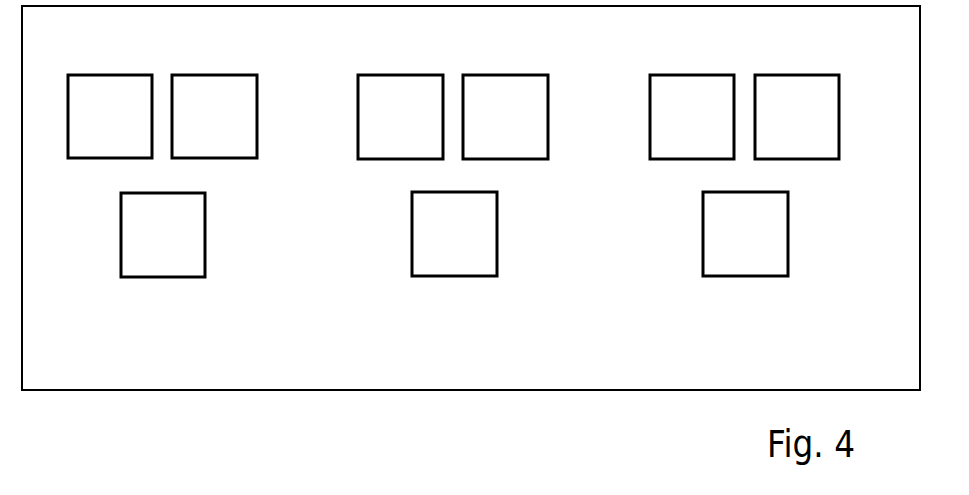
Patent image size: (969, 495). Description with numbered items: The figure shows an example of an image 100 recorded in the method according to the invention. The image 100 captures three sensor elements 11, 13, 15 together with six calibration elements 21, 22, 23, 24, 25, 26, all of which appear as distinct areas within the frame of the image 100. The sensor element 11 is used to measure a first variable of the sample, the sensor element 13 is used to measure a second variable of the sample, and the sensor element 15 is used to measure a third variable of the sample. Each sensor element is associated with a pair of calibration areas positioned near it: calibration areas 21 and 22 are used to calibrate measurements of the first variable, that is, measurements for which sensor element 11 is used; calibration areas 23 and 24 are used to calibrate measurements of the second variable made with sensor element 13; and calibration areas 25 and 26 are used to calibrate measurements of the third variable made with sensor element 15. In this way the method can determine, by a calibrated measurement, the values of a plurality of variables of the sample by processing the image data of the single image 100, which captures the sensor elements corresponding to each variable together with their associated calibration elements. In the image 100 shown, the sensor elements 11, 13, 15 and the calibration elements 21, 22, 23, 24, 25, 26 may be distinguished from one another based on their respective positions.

The image 100 is at (845, 358).
The sensor element 11 is at (142, 248).
The sensor element 13 is at (434, 252).
The sensor element 15 is at (725, 246).
The calibration element 21 is at (90, 137).
The calibration element 22 is at (194, 137).
The calibration element 23 is at (380, 138).
The calibration element 24 is at (485, 138).
The calibration element 25 is at (671, 138).
The calibration element 26 is at (776, 138).